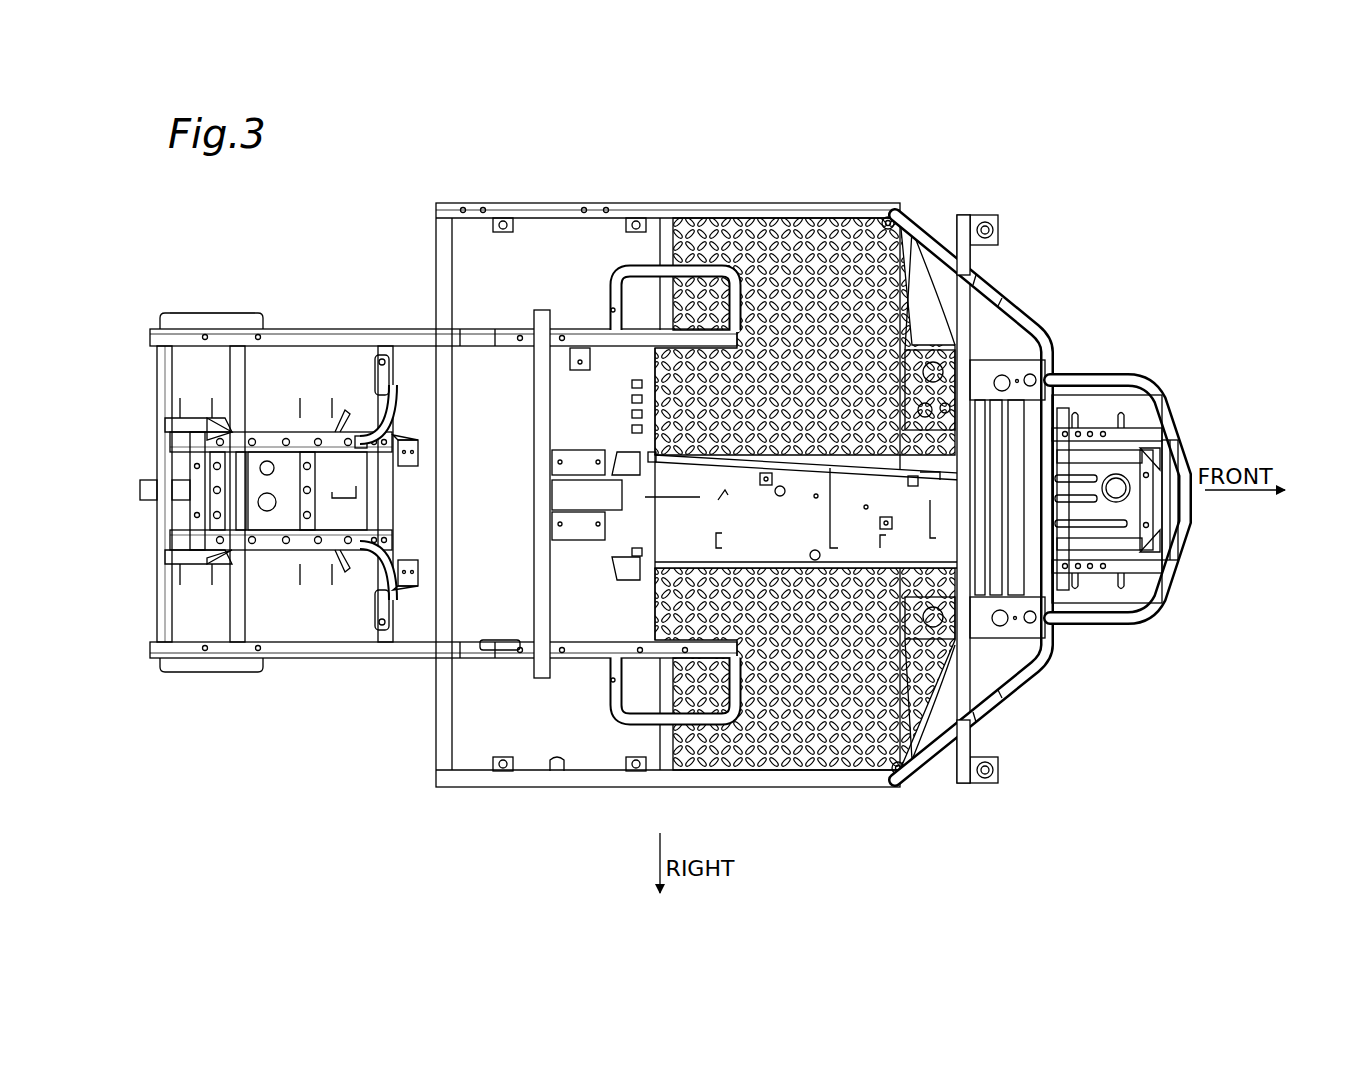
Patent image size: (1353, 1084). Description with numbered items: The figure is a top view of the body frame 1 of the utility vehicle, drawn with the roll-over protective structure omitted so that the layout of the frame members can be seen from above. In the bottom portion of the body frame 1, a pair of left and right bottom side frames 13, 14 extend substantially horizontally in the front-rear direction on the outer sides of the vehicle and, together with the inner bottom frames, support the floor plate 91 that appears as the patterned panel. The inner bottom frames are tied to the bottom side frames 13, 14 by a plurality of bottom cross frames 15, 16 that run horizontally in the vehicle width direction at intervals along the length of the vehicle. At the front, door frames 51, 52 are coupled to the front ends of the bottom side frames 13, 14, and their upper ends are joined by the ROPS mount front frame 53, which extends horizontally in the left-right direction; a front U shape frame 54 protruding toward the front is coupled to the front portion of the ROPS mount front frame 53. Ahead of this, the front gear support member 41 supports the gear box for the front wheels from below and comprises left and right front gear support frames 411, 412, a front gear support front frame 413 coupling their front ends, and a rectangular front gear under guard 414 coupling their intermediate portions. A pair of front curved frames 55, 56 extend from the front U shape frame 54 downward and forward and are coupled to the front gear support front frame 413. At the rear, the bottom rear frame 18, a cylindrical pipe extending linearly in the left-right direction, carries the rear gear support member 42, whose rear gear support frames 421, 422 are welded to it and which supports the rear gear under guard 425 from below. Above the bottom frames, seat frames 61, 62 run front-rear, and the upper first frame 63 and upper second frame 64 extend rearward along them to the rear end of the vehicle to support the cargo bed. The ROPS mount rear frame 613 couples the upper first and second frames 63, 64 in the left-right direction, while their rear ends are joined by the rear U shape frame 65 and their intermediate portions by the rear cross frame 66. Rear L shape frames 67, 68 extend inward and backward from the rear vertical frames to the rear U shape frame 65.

The body frame 1 is at (1072, 240).
The bottom side frame 13 is at (575, 775).
The bottom side frame 14 is at (655, 210).
The bottom cross frame 15 is at (447, 735).
The bottom cross frame 16 is at (447, 232).
The bottom rear frame 18 is at (390, 620).
The front gear support member 41 is at (1142, 522).
The rear gear support member 42 is at (271, 489).
The door frame 51 is at (940, 778).
The door frame 52 is at (912, 230).
The ROPS mount front frame 53 is at (965, 255).
The front U shape frame 54 is at (1005, 292).
The front curved frame 55 is at (1150, 622).
The front curved frame 56 is at (1135, 380).
The seat frame 61 is at (622, 700).
The seat frame 62 is at (610, 300).
The upper first frame 63 is at (512, 660).
The upper second frame 64 is at (512, 328).
The rear U shape frame 65 is at (163, 398).
The rear cross frame 66 is at (240, 365).
The rear L shape frame 67 is at (262, 600).
The rear L shape frame 68 is at (268, 400).
The floor plate 91 is at (808, 748).
The front gear support frame 411 is at (1120, 540).
The front gear support frame 412 is at (1100, 455).
The front gear support front frame 413 is at (1180, 445).
The front gear under guard 414 is at (1097, 525).
The rear gear support frame 421 is at (310, 542).
The rear gear support frame 422 is at (338, 428).
The rear gear under guard 425 is at (290, 520).
The ROPS mount rear frame 613 is at (543, 325).